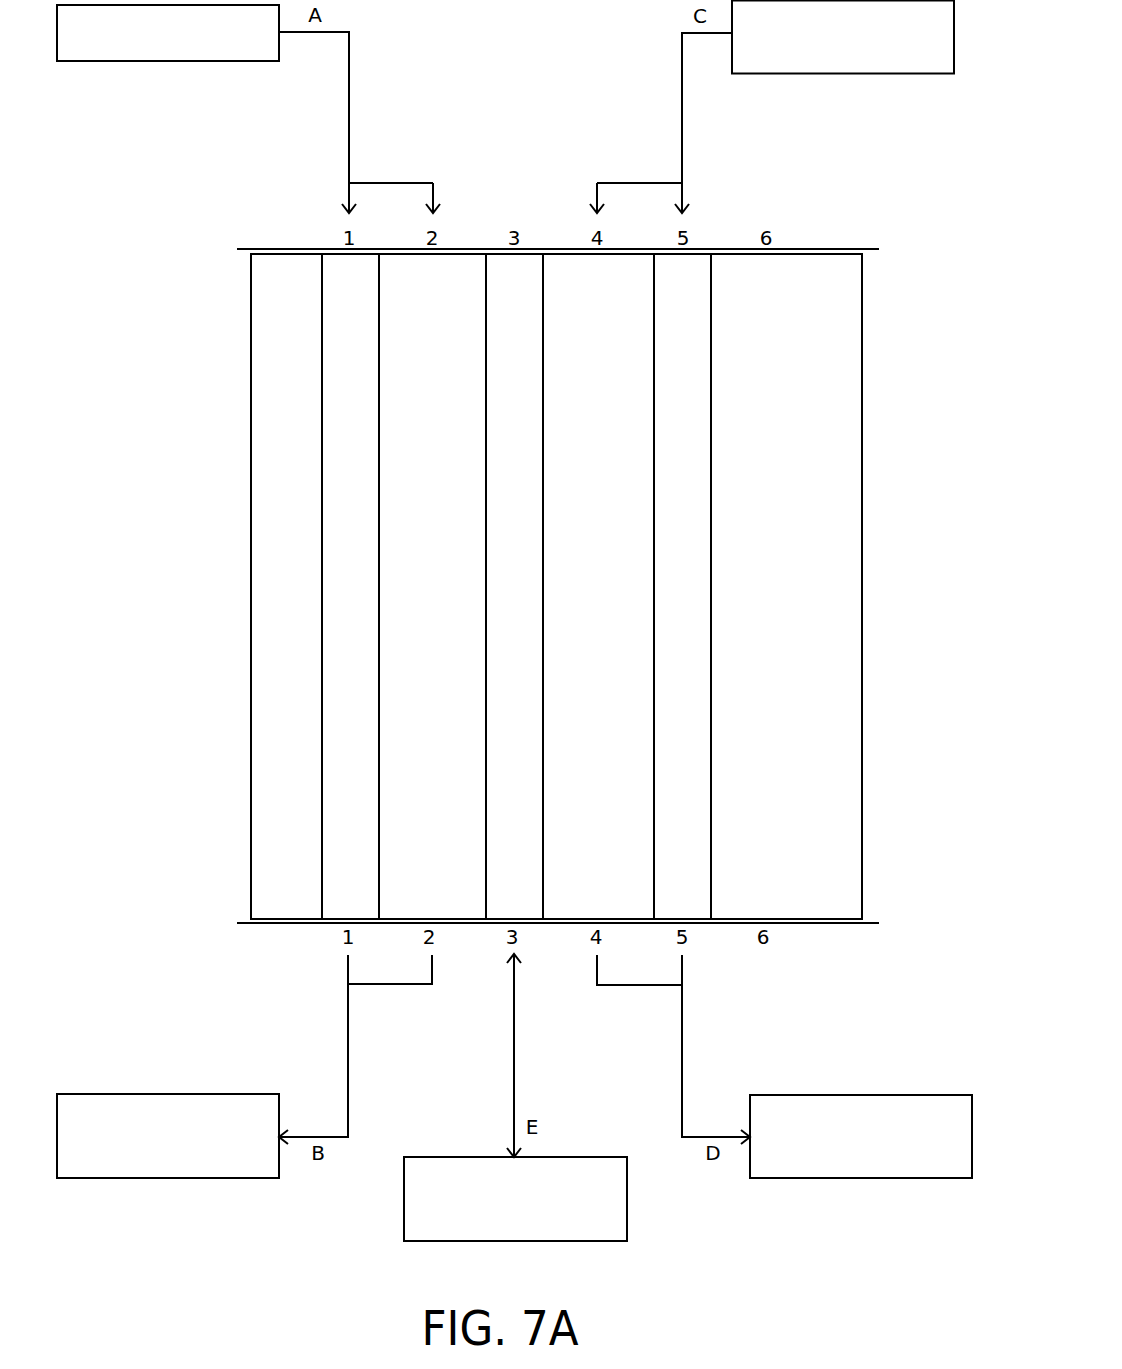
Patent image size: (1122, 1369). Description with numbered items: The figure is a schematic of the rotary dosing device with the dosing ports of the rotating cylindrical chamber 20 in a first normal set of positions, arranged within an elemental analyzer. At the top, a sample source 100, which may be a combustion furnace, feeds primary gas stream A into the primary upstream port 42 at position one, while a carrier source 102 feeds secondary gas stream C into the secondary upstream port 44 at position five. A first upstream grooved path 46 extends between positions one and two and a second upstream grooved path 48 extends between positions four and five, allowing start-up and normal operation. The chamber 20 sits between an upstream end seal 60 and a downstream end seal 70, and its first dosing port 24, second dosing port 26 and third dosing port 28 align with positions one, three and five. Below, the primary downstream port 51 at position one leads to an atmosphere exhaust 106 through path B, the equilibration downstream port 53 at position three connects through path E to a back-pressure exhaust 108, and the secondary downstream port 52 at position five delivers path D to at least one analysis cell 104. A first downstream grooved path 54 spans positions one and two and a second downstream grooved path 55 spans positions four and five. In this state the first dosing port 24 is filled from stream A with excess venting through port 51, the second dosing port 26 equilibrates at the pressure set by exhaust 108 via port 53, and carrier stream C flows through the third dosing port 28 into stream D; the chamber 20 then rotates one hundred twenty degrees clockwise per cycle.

The rotating cylindrical chamber 20 is at (863, 377).
The first dosing port 24 is at (343, 488).
The second dosing port 26 is at (515, 715).
The third dosing port 28 is at (687, 692).
The primary upstream port 42 is at (348, 143).
The secondary upstream port 44 is at (682, 126).
The first upstream grooved path 46 is at (402, 183).
The second upstream grooved path 48 is at (620, 183).
The primary downstream port 51 is at (348, 1049).
The secondary downstream port 52 is at (683, 1060).
The equilibration downstream port 53 is at (517, 1070).
The first downstream grooved path 54 is at (425, 986).
The second downstream grooved path 55 is at (607, 985).
The upstream end seal 60 is at (866, 248).
The downstream end seal 70 is at (843, 923).
The sample source 100 is at (168, 62).
The carrier source 102 is at (855, 75).
The analysis cell 104 is at (885, 1178).
The atmosphere exhaust 106 is at (155, 1178).
The back-pressure exhaust 108 is at (528, 1241).